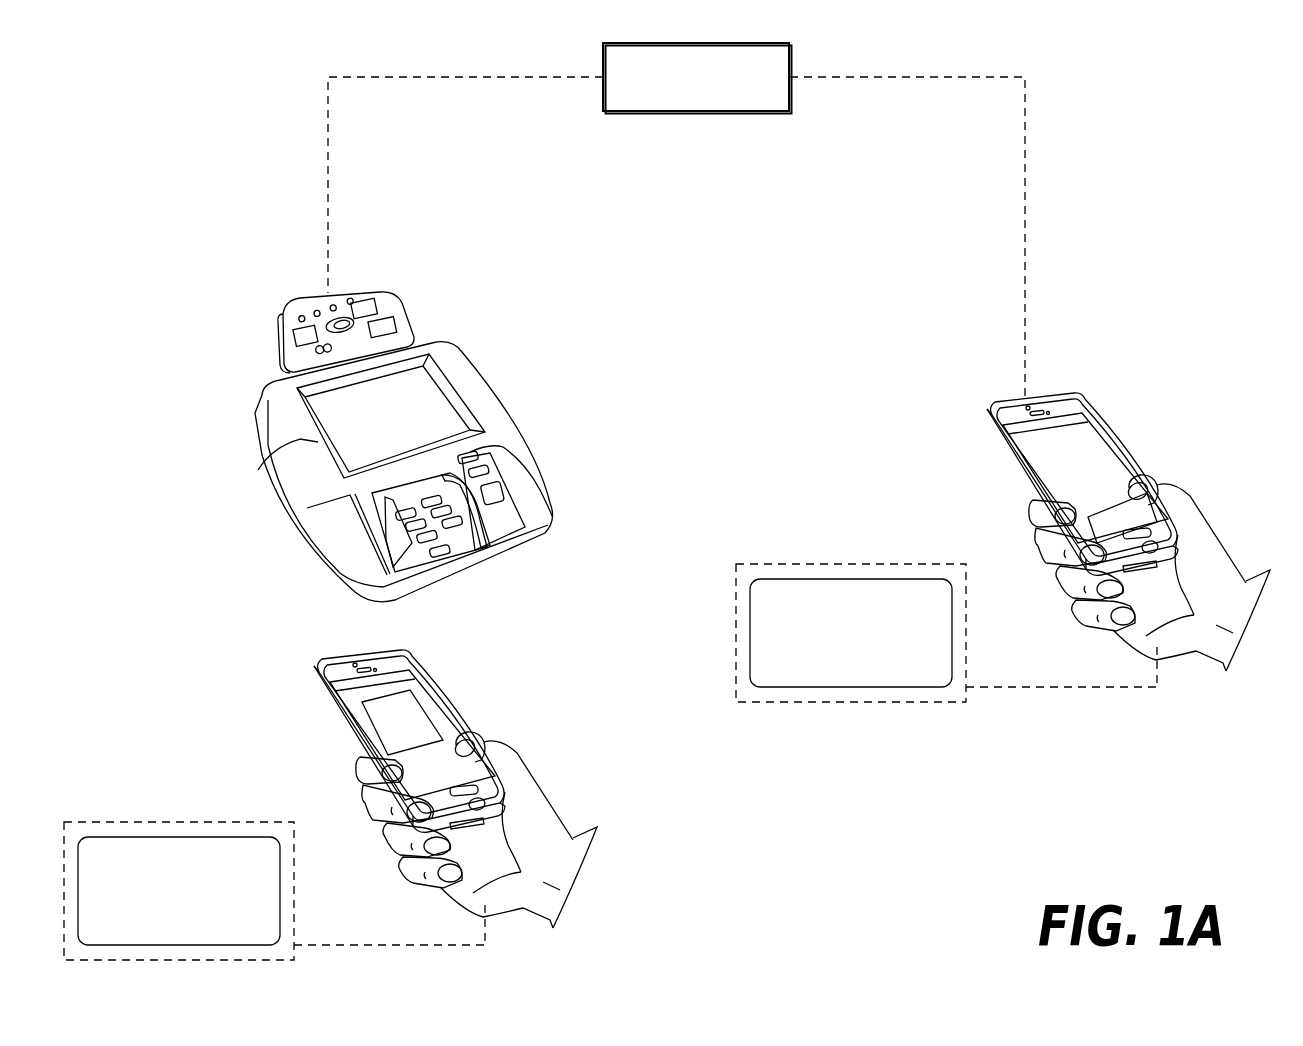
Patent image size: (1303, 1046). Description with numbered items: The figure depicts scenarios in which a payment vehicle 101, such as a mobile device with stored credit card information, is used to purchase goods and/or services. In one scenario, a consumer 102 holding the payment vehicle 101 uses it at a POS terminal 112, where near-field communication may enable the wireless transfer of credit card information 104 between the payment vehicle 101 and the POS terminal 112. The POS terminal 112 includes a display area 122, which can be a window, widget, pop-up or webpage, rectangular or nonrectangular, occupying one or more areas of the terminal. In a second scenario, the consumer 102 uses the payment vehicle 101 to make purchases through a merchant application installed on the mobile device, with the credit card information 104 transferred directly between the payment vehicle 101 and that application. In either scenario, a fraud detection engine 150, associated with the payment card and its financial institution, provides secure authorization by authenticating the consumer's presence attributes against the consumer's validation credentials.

The payment vehicle 101 is at (388, 658).
The consumer 102 is at (527, 770).
The credit card information 104 is at (147, 838).
The POS terminal 112 is at (308, 300).
The display area 122 is at (280, 447).
The fraud detection engine 150 is at (697, 112).